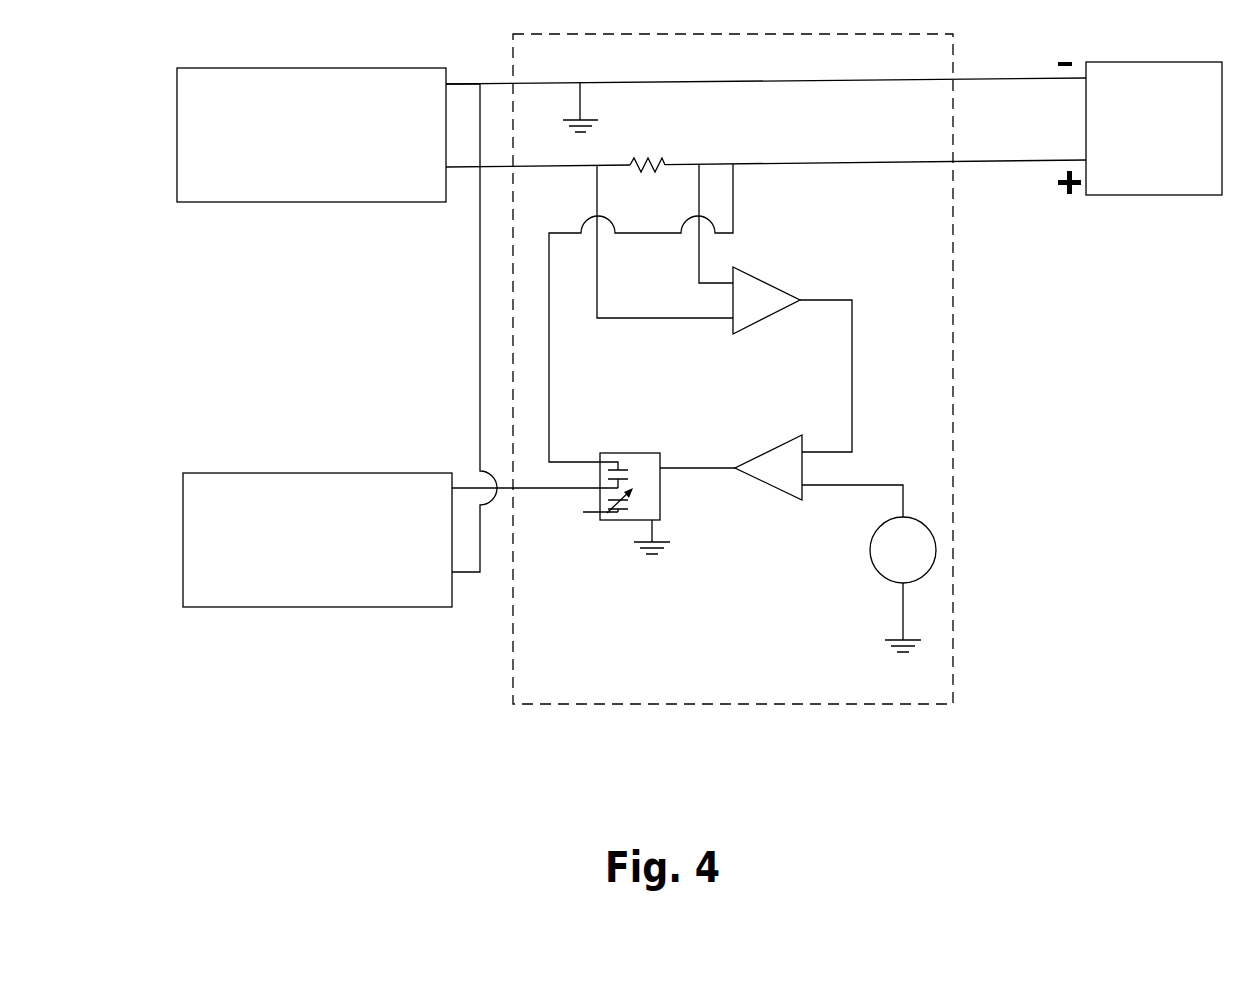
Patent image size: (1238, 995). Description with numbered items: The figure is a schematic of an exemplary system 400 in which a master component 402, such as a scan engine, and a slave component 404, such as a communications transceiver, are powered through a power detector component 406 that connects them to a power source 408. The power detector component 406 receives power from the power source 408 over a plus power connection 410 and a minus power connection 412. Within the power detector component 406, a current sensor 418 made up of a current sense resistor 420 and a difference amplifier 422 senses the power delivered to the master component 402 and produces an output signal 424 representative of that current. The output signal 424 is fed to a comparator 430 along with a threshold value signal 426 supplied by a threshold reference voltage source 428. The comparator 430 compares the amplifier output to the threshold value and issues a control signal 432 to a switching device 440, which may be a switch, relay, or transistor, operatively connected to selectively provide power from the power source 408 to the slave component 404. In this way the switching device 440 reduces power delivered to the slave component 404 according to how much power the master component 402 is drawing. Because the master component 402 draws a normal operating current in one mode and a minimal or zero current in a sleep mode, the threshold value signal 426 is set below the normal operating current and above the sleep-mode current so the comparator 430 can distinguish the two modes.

The system 400 is at (1091, 745).
The master component 402 is at (347, 203).
The slave component 404 is at (317, 608).
The power detector component 406 is at (819, 705).
The power source 408 is at (1152, 196).
The plus power connection 410 is at (1035, 162).
The minus power connection 412 is at (1035, 80).
The current sensor 418 is at (810, 208).
The current sense resistor 420 is at (649, 144).
The difference amplifier 422 is at (735, 335).
The output signal 424 is at (853, 333).
The threshold value signal 426 is at (830, 484).
The threshold reference voltage source 428 is at (871, 553).
The comparator 430 is at (801, 500).
The control signal 432 is at (687, 467).
The switching device 440 is at (635, 452).